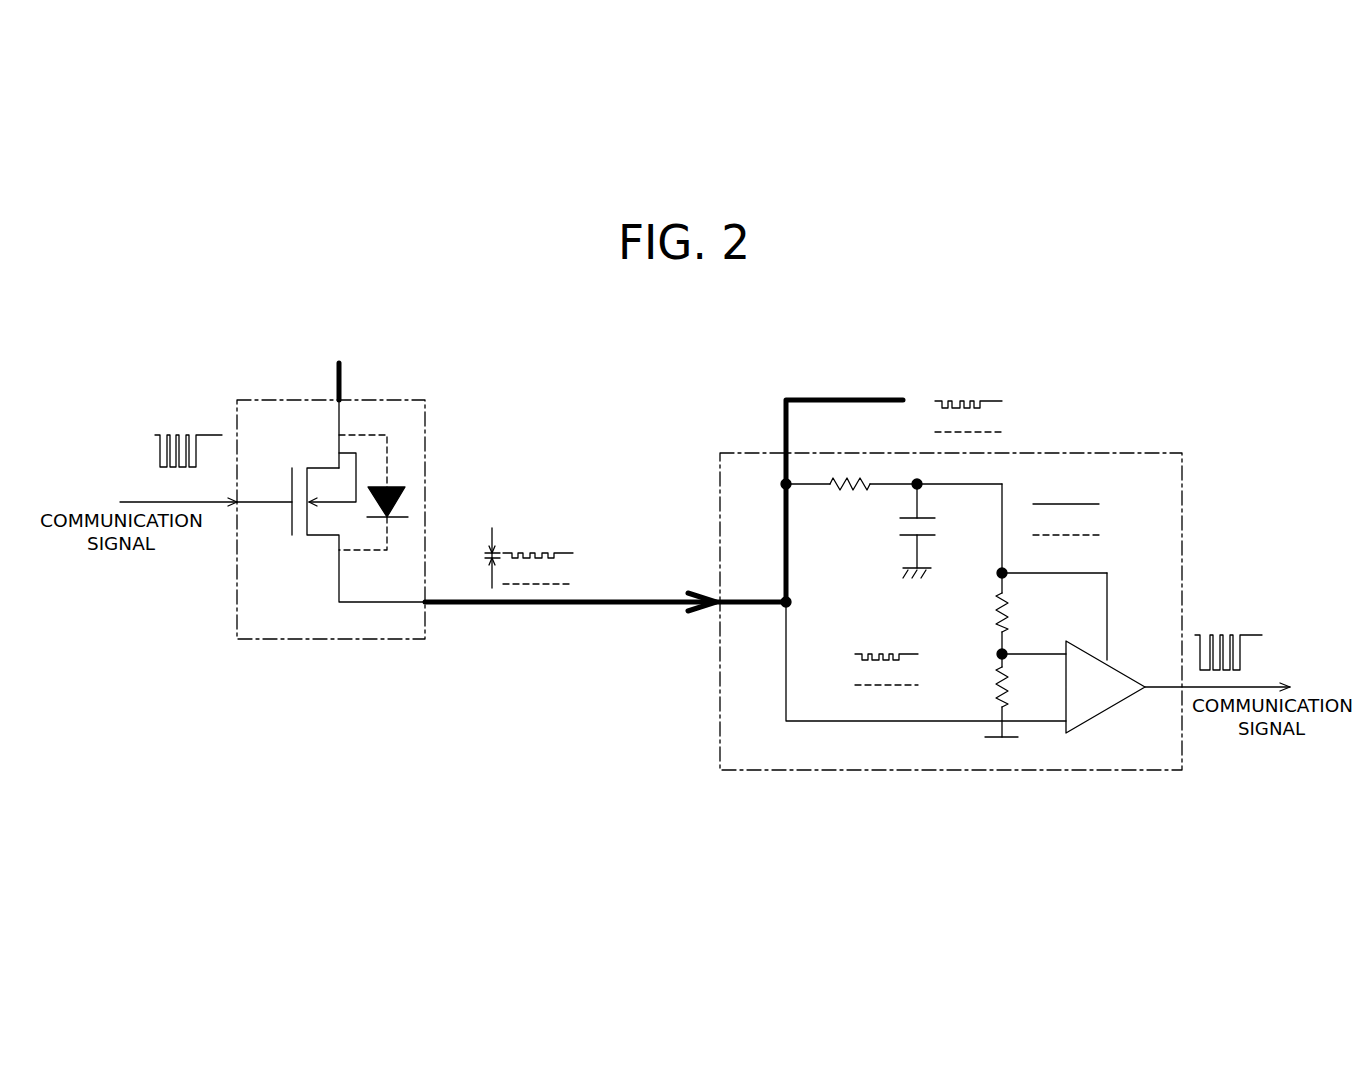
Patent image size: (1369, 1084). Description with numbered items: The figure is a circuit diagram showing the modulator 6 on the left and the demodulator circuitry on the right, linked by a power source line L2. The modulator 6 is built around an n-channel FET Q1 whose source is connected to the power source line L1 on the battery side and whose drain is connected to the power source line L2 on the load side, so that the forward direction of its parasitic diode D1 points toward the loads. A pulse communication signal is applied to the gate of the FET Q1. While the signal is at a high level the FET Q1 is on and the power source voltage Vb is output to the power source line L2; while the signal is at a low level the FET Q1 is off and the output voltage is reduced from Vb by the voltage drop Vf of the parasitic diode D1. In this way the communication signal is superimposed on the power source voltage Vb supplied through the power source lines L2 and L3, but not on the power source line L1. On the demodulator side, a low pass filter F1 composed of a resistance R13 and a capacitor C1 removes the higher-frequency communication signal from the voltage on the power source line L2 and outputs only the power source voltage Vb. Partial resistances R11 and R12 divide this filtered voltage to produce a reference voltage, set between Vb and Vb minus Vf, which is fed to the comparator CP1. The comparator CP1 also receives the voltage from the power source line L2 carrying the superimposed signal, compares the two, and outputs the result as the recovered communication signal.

The modulator 6 is at (425, 431).
The power source line L1 is at (342, 373).
The n-channel FET Q1 is at (323, 467).
The parasitic diode D1 is at (392, 486).
The voltage drop Vf is at (492, 553).
The power source voltage Vb is at (563, 553).
The power source line L2 is at (638, 600).
The power source line L3 is at (846, 400).
The low pass filter F1 is at (866, 547).
The resistance R13 is at (848, 489).
The capacitor C1 is at (928, 516).
The partial resistance R11 is at (1009, 611).
The partial resistance R12 is at (1000, 679).
The comparator CP1 is at (1126, 672).